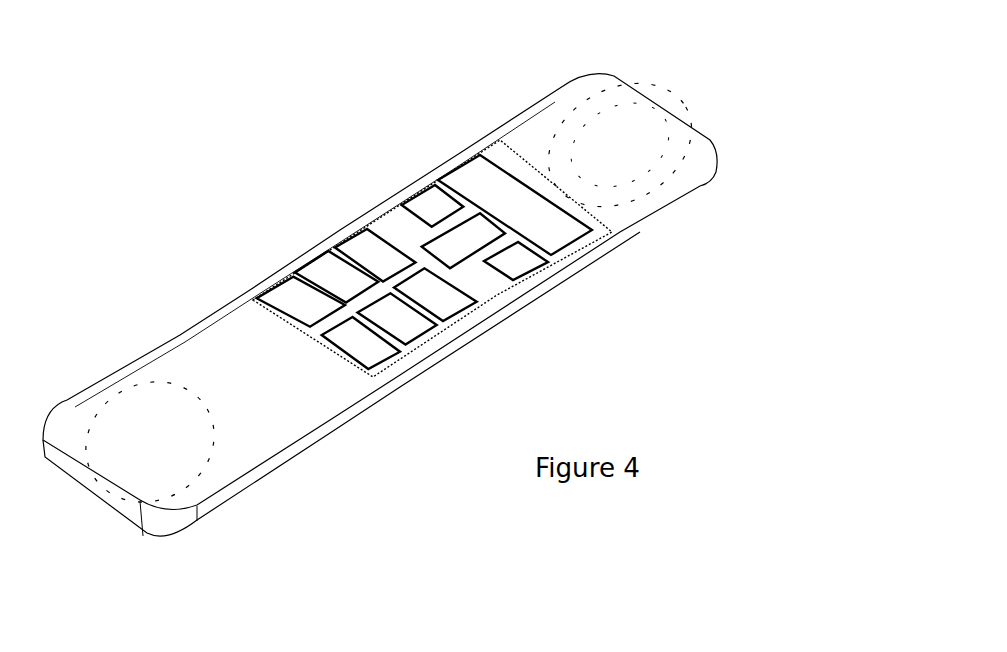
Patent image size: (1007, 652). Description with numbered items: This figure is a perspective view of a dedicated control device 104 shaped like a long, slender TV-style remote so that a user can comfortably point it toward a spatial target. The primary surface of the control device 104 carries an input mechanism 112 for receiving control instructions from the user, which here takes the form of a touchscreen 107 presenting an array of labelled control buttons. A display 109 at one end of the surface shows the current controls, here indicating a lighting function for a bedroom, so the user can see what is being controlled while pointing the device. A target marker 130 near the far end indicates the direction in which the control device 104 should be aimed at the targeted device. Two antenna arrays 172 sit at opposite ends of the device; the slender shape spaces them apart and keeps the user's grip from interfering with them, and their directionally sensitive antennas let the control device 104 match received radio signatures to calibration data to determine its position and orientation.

The control device 104 is at (675, 203).
The touchscreen 107 is at (362, 368).
The display 109 is at (562, 228).
The input mechanism 112 is at (488, 295).
The target marker 130 is at (590, 150).
The antenna arrays 172 is at (618, 97).